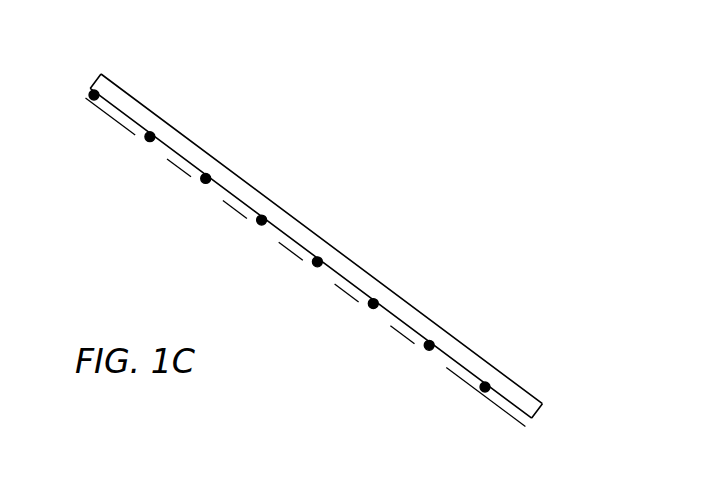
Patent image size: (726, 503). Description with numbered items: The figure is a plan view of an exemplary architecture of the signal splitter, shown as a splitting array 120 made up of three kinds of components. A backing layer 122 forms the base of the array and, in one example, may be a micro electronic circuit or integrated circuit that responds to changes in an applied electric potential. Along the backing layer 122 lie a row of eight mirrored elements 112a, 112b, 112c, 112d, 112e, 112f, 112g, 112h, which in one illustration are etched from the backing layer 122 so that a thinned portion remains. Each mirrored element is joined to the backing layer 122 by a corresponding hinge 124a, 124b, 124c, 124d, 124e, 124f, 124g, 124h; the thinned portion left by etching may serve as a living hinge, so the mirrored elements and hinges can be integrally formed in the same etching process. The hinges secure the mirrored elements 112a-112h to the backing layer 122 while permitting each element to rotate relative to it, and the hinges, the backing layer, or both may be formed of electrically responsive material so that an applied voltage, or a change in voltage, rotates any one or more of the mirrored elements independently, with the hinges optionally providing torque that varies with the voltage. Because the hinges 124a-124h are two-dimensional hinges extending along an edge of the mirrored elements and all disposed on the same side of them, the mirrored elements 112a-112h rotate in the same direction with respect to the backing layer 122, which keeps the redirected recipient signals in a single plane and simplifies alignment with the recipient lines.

The splitting array 120 is at (424, 237).
The backing layer 122 is at (111, 74).
The hinge 124a is at (109, 102).
The hinge 124b is at (165, 144).
The hinge 124c is at (221, 185).
The hinge 124d is at (277, 227).
The hinge 124e is at (332, 269).
The hinge 124f is at (388, 311).
The hinge 124g is at (444, 352).
The hinge 124h is at (500, 394).
The mirrored element 112a is at (111, 117).
The mirrored element 112b is at (167, 159).
The mirrored element 112c is at (223, 201).
The mirrored element 112d is at (279, 242).
The mirrored element 112e is at (335, 284).
The mirrored element 112f is at (390, 326).
The mirrored element 112g is at (446, 367).
The mirrored element 112h is at (502, 409).